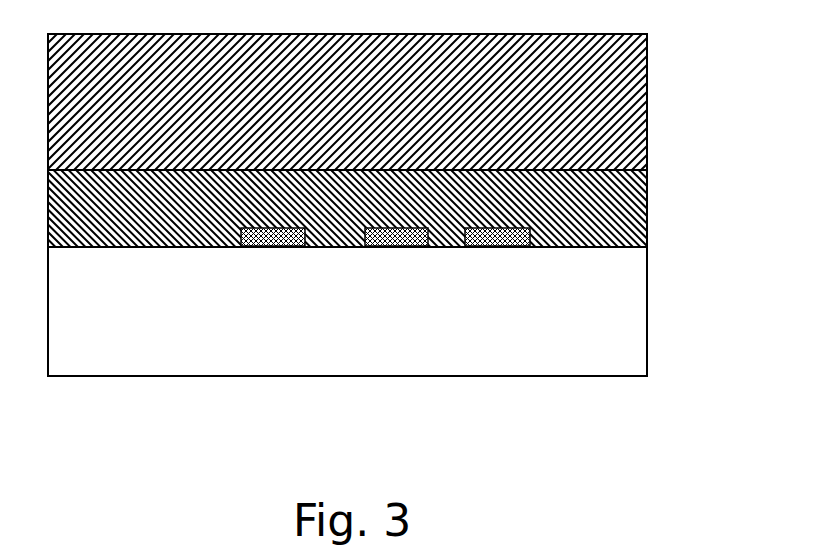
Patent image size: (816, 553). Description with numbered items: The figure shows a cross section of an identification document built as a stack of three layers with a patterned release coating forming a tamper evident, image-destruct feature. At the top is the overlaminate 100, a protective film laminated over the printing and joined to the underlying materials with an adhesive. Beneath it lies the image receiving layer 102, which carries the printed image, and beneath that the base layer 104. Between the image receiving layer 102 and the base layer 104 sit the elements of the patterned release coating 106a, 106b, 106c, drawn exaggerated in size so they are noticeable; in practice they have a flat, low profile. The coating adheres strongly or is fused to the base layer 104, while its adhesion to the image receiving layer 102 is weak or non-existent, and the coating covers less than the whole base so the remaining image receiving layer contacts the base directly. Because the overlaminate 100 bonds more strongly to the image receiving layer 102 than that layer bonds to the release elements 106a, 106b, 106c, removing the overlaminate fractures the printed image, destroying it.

The overlaminate 100 is at (639, 100).
The image receiving layer 102 is at (639, 195).
The base layer 104 is at (639, 300).
The release layer element 106a is at (270, 240).
The release layer element 106b is at (392, 240).
The release layer element 106c is at (493, 240).